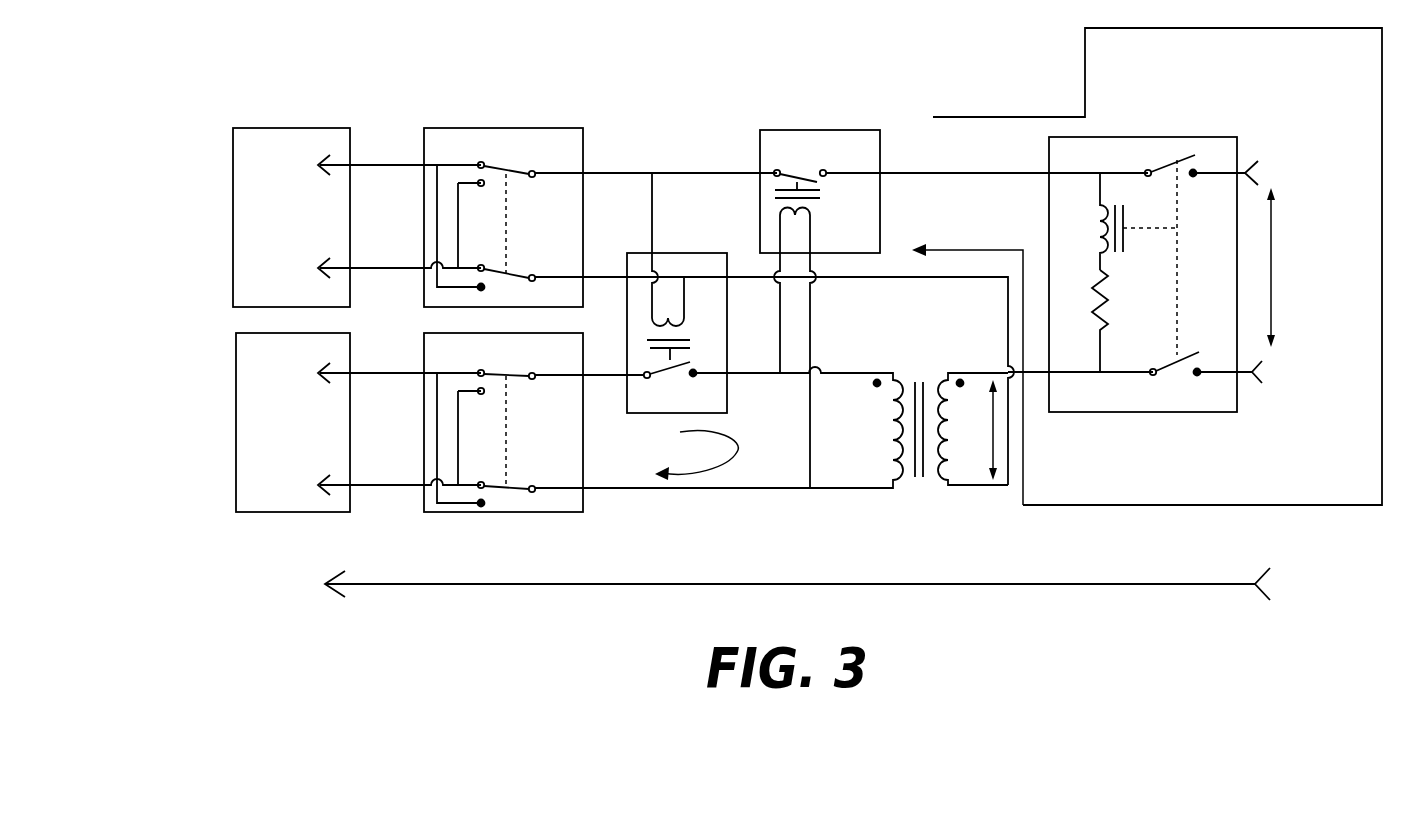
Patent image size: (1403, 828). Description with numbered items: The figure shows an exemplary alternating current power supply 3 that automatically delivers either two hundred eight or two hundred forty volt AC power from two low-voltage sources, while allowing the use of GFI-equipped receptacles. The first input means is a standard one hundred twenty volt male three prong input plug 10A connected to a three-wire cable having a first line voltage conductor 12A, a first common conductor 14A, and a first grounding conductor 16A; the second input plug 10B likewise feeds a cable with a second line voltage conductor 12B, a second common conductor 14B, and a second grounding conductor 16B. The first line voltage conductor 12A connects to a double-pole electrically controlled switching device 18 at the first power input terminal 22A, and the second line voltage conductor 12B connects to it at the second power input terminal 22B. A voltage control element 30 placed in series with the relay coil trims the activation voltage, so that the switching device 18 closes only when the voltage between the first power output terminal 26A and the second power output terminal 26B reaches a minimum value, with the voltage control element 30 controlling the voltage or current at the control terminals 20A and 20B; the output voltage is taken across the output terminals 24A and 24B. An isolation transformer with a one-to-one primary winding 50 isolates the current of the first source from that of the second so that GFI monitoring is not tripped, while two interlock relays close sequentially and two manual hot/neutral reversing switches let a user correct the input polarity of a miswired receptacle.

The alternating current power supply 3 is at (518, 78).
The first input plug 10A is at (322, 128).
The second input plug 10B is at (323, 513).
The first line voltage conductor 12A is at (382, 164).
The second line voltage conductor 12B is at (368, 372).
The first common conductor 14A is at (382, 266).
The second common conductor 14B is at (370, 484).
The first grounding conductor 16A is at (759, 618).
The second grounding conductor 16B is at (393, 590).
The double-pole electrically controlled switching device 18 is at (1195, 137).
The control terminal 20A is at (1016, 170).
The control terminal 20B is at (1032, 375).
The first power input terminal 22A is at (1156, 168).
The second power input terminal 22B is at (1152, 376).
The voltage output terminal 24A is at (1240, 160).
The neutral output terminal 24B is at (1227, 378).
The first power output terminal 26A is at (1197, 169).
The second power output terminal 26B is at (1197, 376).
The voltage control element 30 is at (1110, 302).
The primary winding 50 is at (857, 430).